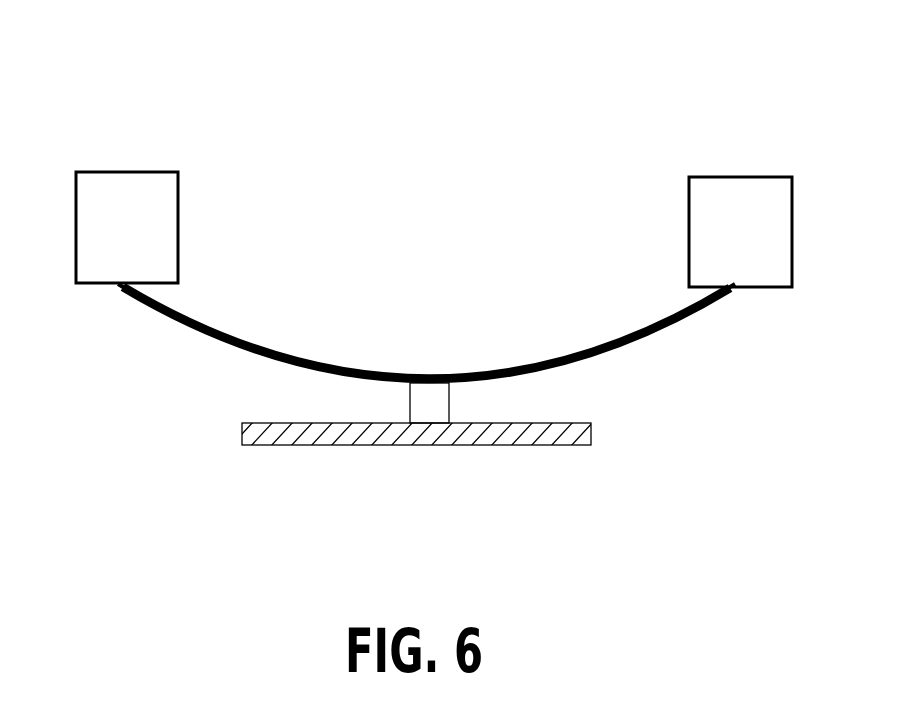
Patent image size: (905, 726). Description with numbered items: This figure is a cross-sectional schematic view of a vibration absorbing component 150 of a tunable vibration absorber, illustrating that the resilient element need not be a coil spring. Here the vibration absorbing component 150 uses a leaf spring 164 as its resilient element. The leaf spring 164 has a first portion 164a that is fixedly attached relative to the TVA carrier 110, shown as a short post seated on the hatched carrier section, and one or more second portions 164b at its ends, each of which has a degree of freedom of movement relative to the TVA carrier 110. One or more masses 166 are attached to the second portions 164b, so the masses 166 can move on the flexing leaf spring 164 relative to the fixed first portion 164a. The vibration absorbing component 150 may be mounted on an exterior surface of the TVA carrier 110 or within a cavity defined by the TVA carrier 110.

The vibration absorbing component 150 is at (589, 100).
The masses 166 is at (142, 172).
The leaf spring 164 is at (312, 357).
The first portion 164a is at (432, 373).
The second portions 164b is at (122, 288).
The TVA carrier 110 is at (583, 430).